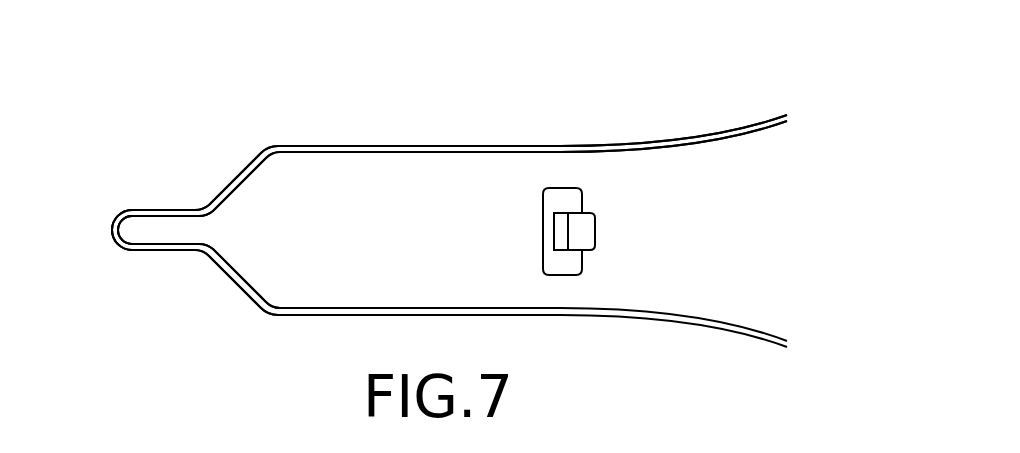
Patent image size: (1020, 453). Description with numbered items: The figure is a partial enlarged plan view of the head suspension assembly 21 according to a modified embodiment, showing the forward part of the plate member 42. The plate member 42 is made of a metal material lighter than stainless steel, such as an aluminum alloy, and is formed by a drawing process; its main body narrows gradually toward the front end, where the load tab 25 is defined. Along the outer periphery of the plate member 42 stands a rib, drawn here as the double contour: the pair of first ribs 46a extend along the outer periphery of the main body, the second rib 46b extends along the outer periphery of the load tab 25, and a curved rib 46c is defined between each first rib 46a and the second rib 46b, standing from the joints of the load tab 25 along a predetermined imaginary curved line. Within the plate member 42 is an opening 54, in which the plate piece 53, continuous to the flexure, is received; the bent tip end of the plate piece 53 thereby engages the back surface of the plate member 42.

The head suspension assembly 21 is at (229, 149).
The load tab 25 is at (115, 243).
The plate member 42 is at (653, 138).
The first rib 46a is at (488, 147).
The second rib 46b is at (126, 210).
The curved rib 46c is at (204, 211).
The plate piece 53 is at (590, 218).
The opening 54 is at (546, 260).